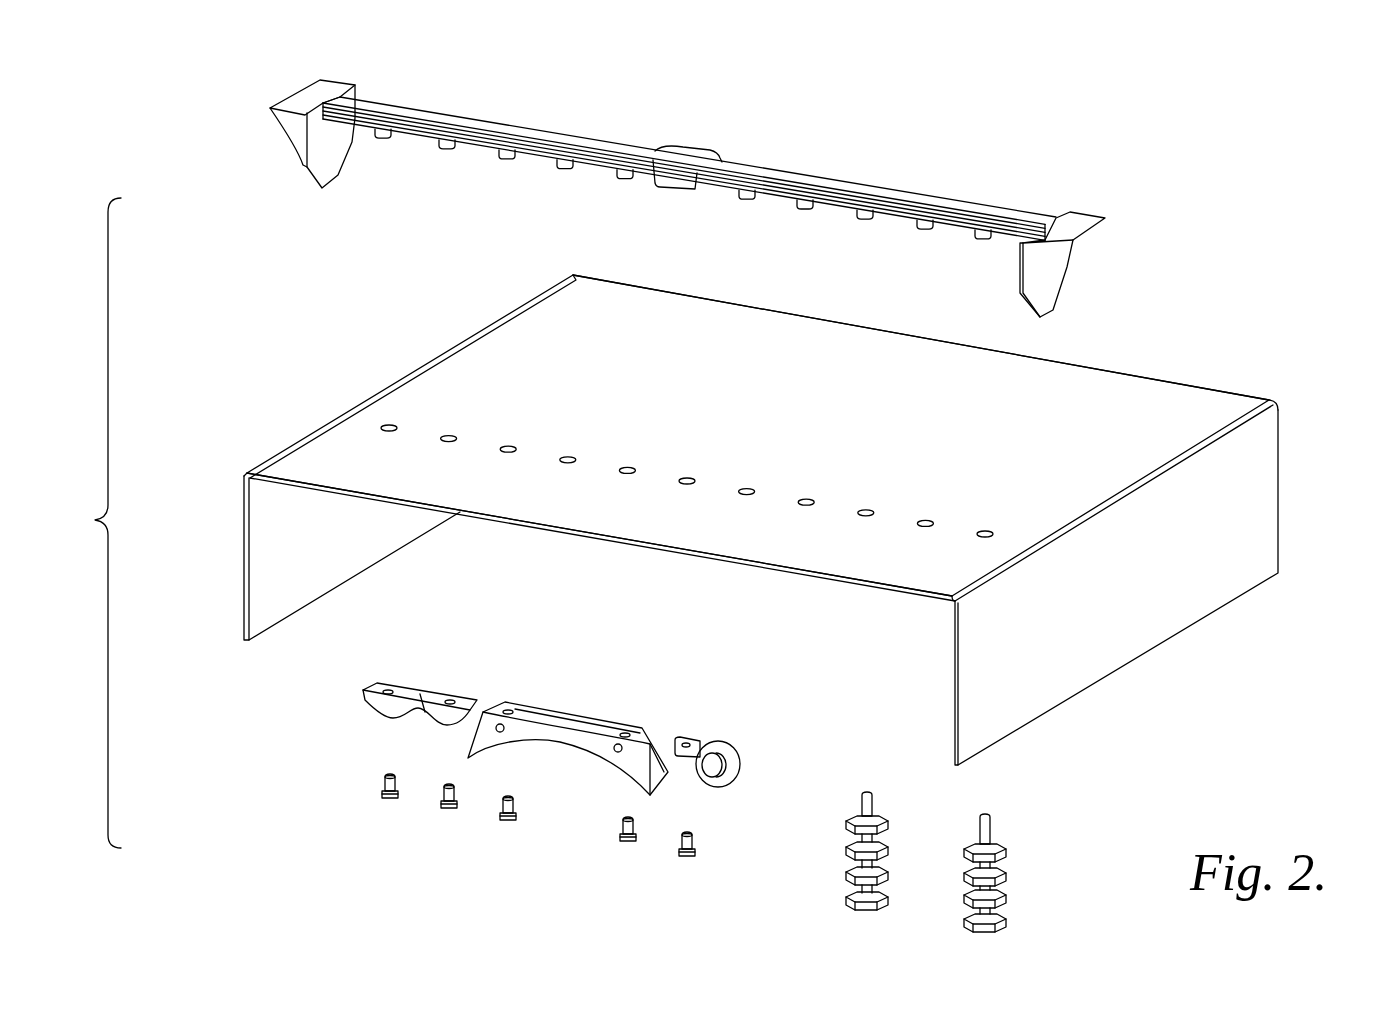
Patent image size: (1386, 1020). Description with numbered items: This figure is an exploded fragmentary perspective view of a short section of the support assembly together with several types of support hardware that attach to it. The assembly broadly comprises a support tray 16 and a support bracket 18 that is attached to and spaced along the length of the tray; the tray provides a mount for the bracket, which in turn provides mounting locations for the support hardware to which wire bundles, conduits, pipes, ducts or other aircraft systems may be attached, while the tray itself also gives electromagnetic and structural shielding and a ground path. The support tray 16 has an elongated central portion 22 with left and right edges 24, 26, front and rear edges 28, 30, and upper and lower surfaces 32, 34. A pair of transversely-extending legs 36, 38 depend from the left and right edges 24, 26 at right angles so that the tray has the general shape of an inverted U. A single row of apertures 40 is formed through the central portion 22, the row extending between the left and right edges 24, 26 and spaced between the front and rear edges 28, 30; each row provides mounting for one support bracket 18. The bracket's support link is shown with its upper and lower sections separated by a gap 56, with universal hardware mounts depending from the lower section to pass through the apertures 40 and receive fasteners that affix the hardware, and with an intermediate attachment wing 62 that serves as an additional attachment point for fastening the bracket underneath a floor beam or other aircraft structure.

The support tray 16 is at (475, 357).
The support bracket 18 is at (463, 101).
The elongated central portion 22 is at (762, 402).
The left edge 24 is at (527, 300).
The right edge 26 is at (1280, 408).
The front edge 28 is at (590, 536).
The rear edge 30 is at (858, 325).
The upper surface 32 is at (630, 310).
The lower surface 34 is at (773, 580).
The leg 36 is at (246, 563).
The leg 38 is at (1180, 617).
The aperture 40 is at (624, 468).
The gap 56 is at (603, 162).
The intermediate attachment wing 62 is at (693, 158).